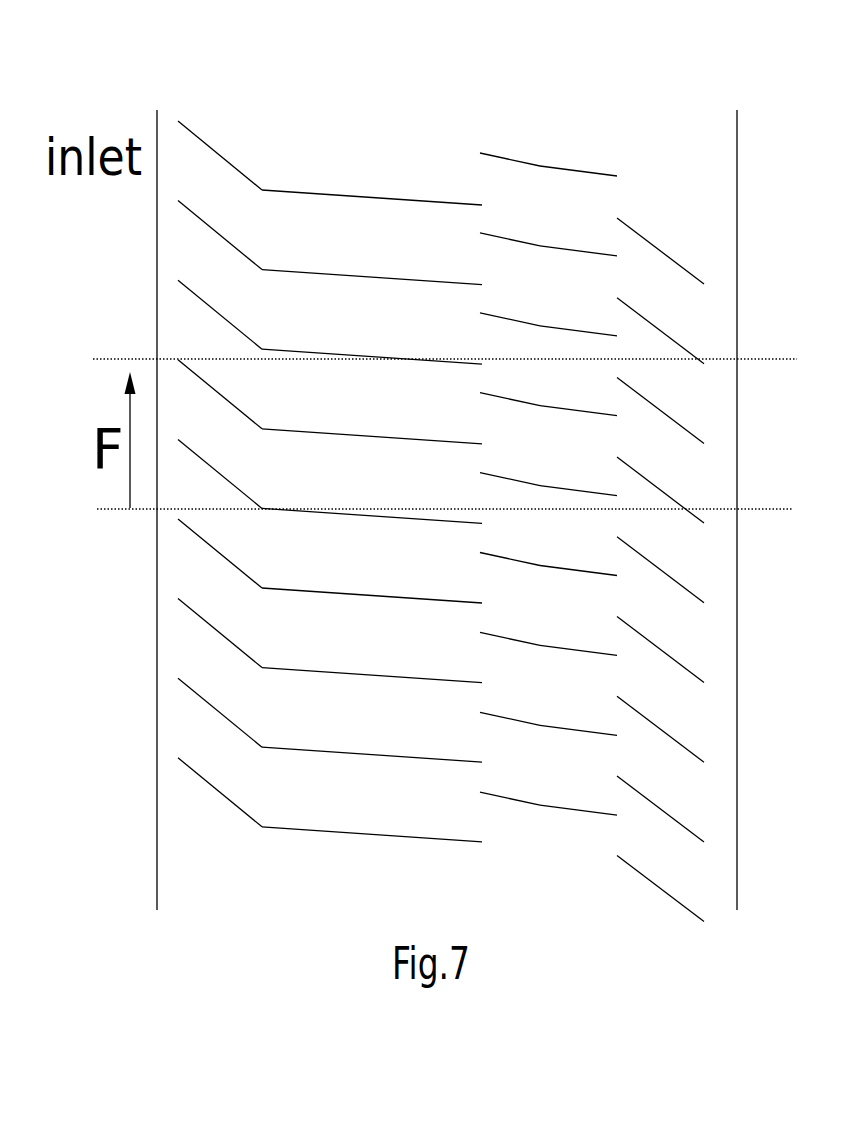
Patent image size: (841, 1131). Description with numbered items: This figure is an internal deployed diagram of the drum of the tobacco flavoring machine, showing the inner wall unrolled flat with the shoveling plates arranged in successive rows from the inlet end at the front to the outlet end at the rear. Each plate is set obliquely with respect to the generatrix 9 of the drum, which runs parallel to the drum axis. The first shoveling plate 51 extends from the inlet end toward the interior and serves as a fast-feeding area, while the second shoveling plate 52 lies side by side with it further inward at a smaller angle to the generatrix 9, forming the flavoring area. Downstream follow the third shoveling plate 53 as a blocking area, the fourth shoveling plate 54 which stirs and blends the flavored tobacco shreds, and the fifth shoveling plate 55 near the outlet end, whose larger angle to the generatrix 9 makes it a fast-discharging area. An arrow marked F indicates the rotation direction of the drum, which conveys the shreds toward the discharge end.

The generatrix 9 is at (123, 359).
The first shoveling plate 51 is at (245, 432).
The second shoveling plate 52 is at (372, 439).
The third shoveling plate 53 is at (511, 421).
The fourth shoveling plate 54 is at (601, 426).
The fifth shoveling plate 55 is at (685, 479).